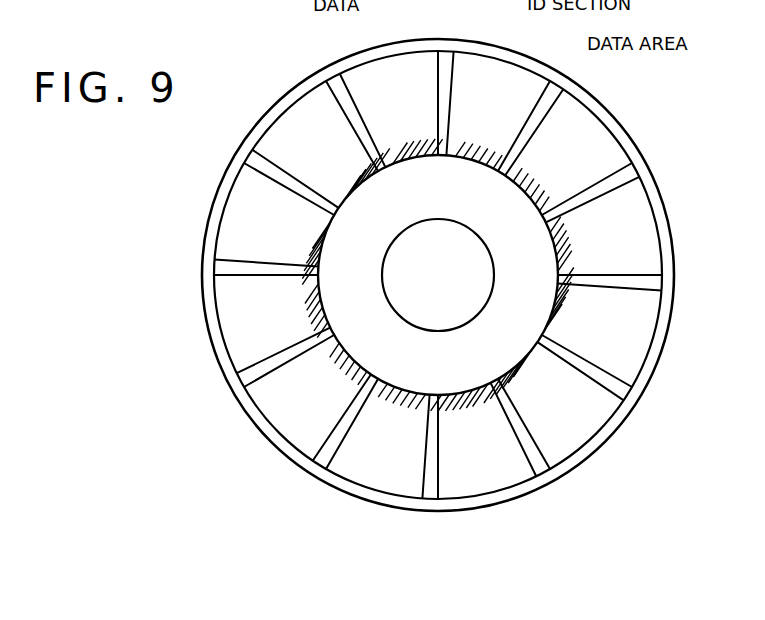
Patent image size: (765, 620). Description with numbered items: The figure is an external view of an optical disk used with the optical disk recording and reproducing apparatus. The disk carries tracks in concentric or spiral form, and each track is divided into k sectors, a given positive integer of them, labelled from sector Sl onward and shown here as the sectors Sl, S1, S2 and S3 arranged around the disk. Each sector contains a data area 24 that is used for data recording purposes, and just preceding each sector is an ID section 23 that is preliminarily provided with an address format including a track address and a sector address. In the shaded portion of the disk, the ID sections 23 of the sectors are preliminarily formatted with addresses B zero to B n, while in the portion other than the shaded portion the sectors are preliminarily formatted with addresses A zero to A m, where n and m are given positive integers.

The ID section 23 is at (448, 54).
The data area 24 is at (510, 84).
The sector S1 is at (498, 112).
The sector S2 is at (568, 152).
The sector S3 is at (604, 226).
The sector Sl is at (389, 109).